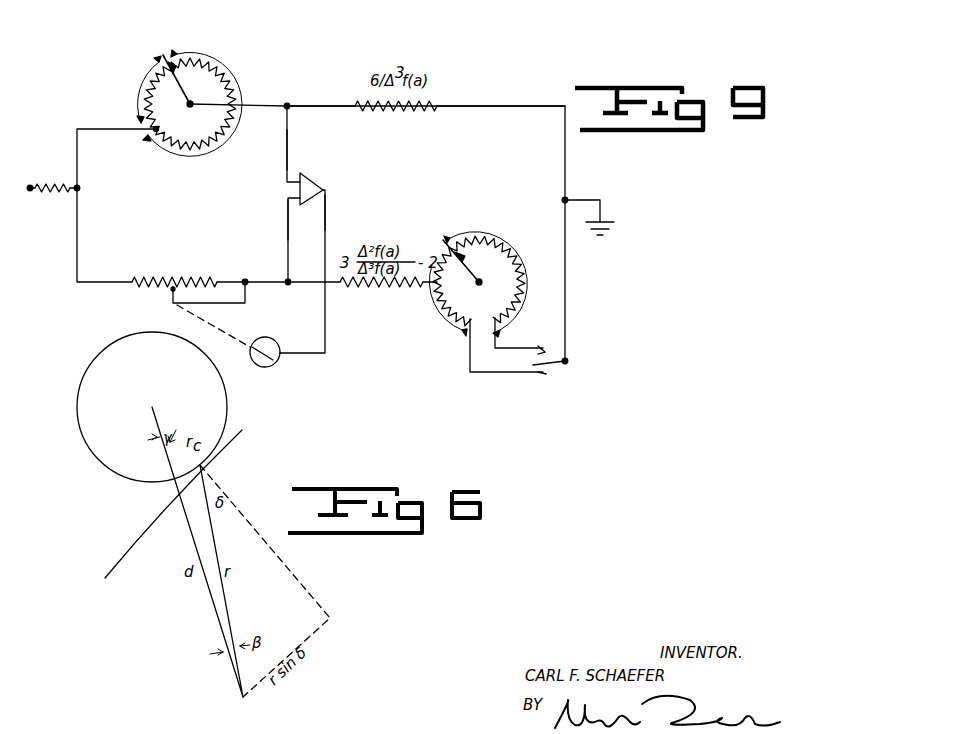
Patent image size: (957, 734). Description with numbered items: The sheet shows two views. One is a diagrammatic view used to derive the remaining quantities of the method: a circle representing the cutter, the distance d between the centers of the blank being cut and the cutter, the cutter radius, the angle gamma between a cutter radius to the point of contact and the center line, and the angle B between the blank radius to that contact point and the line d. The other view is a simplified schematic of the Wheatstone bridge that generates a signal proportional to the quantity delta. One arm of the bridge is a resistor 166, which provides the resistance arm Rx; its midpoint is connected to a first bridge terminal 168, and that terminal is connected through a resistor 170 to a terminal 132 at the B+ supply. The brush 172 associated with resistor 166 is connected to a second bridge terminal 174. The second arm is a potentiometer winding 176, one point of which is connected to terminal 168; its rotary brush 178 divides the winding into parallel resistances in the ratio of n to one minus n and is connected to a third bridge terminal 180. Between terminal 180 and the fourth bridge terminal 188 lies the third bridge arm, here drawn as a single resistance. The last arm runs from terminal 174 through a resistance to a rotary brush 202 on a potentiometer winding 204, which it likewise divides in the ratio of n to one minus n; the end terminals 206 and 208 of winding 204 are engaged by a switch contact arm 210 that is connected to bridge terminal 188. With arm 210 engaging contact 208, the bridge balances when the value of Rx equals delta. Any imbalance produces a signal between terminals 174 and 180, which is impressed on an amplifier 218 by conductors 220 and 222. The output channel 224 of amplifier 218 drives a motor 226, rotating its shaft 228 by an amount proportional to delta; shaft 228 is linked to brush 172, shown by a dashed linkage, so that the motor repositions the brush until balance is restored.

The terminal 132 is at (30, 186).
The resistor 170 is at (52, 193).
The first bridge terminal 168 is at (80, 188).
The potentiometer winding 176 is at (210, 66).
The rotary brush 178 is at (170, 45).
The third bridge terminal 180 is at (289, 104).
The amplifier 218 is at (318, 180).
The conductor 220 is at (288, 150).
The conductor 222 is at (287, 222).
The output channel 224 is at (326, 212).
The fourth bridge terminal 188 is at (567, 198).
The resistor 166 is at (205, 275).
The brush 172 is at (175, 300).
The second bridge terminal 174 is at (287, 285).
The motor 226 is at (273, 360).
The motor shaft 228 is at (237, 340).
The rotary brush 202 is at (492, 222).
The potentiometer winding 204 is at (505, 248).
The end terminal 206 is at (542, 352).
The end terminal 208 is at (545, 375).
The switch contact arm 210 is at (560, 363).